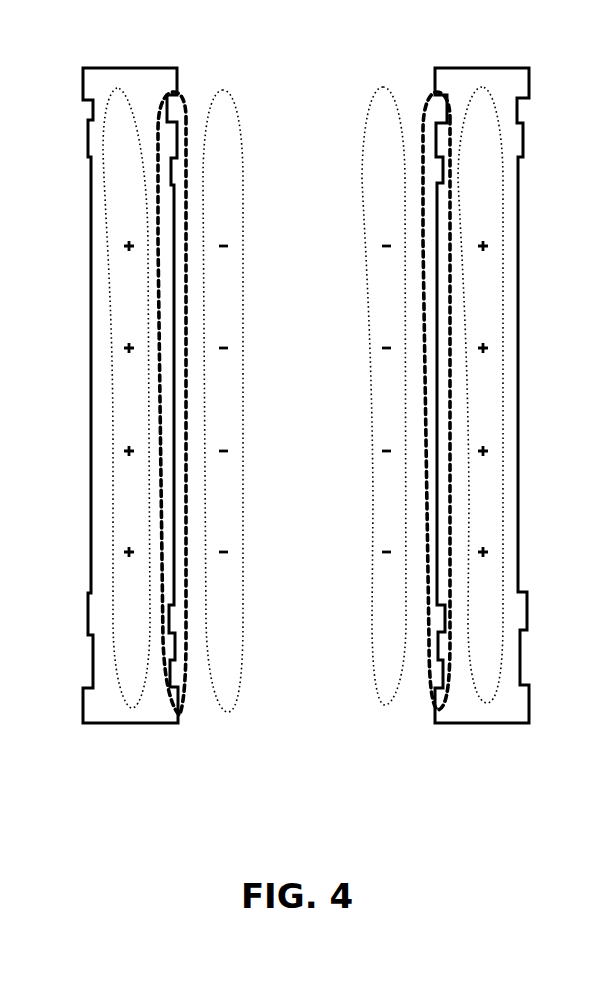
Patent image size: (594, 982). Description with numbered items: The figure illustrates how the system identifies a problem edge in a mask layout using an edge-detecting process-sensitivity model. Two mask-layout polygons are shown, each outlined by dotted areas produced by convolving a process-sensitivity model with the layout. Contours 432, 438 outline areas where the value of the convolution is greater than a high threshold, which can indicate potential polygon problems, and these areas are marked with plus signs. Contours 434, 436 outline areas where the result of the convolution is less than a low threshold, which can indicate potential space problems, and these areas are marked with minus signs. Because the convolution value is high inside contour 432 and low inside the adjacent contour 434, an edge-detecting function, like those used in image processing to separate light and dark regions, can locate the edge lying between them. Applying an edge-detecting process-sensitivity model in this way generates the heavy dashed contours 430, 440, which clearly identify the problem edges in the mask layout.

The contour 430 is at (186, 108).
The contour 440 is at (427, 108).
The contour 432 is at (137, 708).
The contour 434 is at (232, 712).
The contour 436 is at (388, 705).
The contour 438 is at (493, 700).